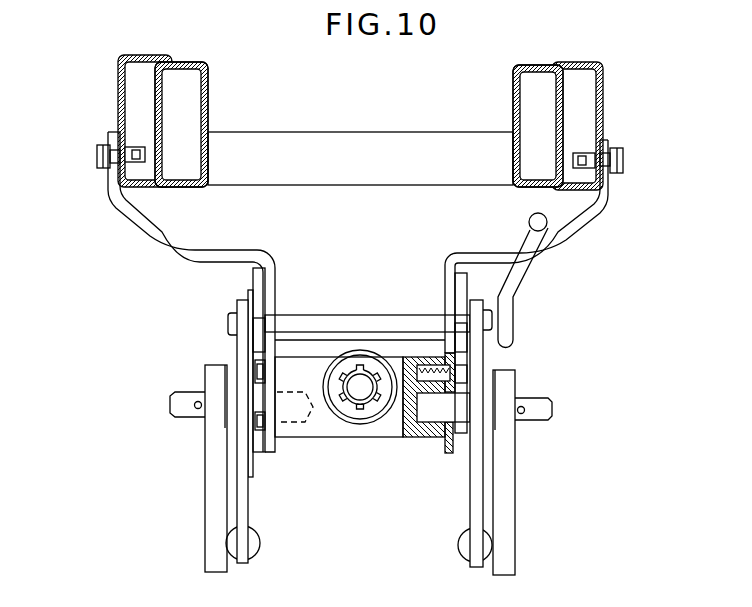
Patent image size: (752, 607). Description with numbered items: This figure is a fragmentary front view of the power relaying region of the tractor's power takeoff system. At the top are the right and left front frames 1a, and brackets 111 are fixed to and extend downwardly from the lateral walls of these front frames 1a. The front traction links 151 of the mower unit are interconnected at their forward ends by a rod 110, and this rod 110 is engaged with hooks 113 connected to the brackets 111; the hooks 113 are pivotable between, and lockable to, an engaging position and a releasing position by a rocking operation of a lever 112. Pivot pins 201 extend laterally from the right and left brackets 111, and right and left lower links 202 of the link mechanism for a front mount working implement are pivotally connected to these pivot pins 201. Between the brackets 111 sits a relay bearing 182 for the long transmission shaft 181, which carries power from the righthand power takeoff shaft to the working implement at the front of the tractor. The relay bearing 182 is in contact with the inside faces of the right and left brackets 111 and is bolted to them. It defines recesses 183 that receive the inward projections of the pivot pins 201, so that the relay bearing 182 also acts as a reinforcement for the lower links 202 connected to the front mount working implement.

The front frame 1a is at (208, 104).
The rod 110 is at (397, 315).
The bracket 111 is at (185, 258).
The lever 112 is at (507, 288).
The hook 113 is at (255, 348).
The front link 151 is at (245, 515).
The transmission shaft 181 is at (352, 375).
The relay bearing 182 is at (323, 437).
The recess 183 is at (413, 403).
The pivot pin 201 is at (170, 405).
The lower link 202 is at (205, 500).